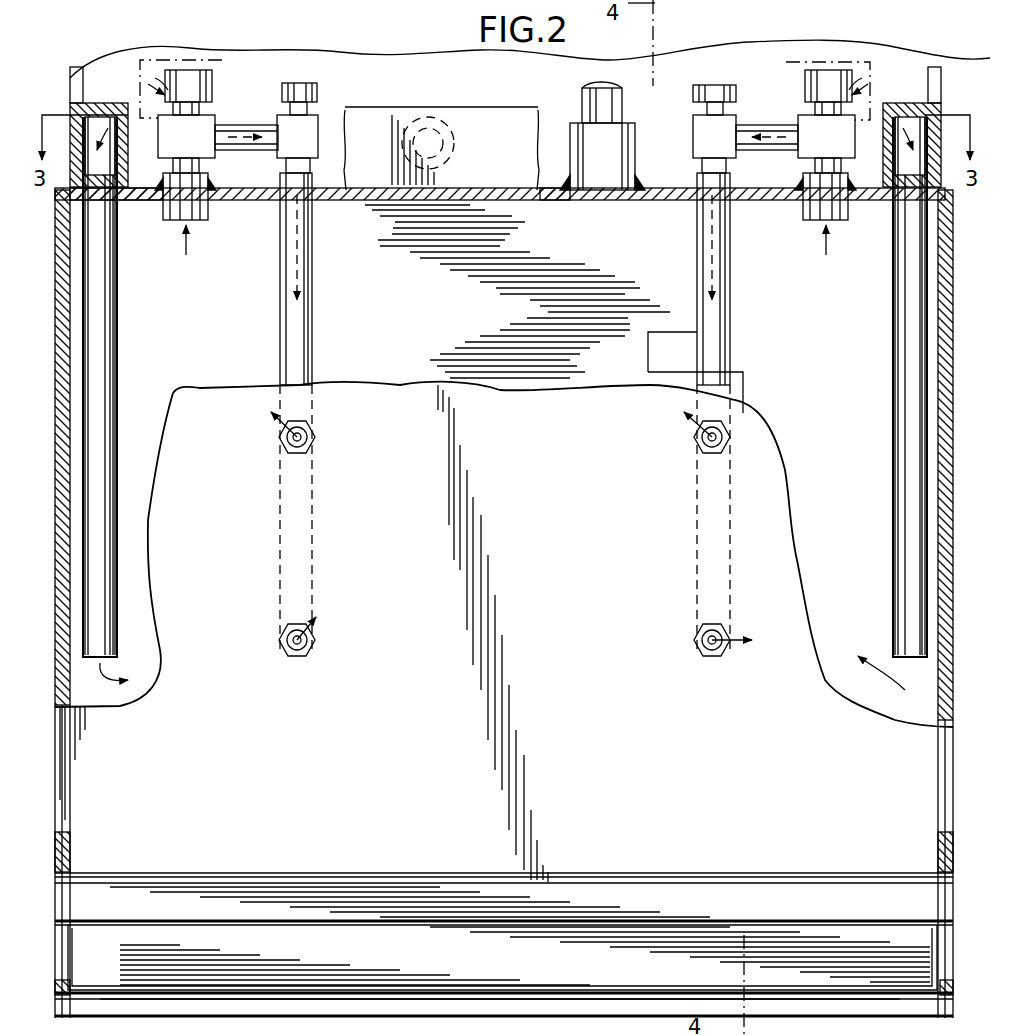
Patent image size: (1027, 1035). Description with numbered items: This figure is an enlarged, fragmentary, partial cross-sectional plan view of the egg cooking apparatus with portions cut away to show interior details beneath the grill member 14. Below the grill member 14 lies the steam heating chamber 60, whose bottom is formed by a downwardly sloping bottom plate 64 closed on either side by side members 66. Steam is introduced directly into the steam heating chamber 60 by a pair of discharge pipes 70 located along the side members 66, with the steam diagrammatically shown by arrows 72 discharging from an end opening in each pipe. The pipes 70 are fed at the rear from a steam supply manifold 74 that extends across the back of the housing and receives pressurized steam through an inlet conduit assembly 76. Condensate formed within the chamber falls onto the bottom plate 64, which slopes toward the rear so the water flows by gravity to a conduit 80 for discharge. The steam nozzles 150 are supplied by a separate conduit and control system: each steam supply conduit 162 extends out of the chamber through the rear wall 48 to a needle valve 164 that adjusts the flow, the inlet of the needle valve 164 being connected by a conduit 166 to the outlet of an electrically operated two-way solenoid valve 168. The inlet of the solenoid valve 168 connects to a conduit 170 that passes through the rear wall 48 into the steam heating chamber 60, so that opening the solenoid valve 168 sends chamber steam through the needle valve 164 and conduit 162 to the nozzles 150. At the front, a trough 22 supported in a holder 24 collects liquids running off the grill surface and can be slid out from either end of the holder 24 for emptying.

The grill member 14 is at (98, 781).
The trough 22 is at (827, 985).
The holder 24 is at (888, 1017).
The rear wall 48 is at (575, 200).
The steam heating chamber 60 is at (228, 328).
The bottom plate 64 is at (567, 380).
The side members 66 is at (70, 385).
The discharge pipes 70 is at (115, 630).
The arrows 72 is at (100, 685).
The steam supply manifold 74 is at (130, 195).
The inlet conduit assembly 76 is at (438, 118).
The conduit 80 is at (636, 135).
The steam nozzles 150 is at (315, 440).
The steam supply conduit 162 is at (315, 340).
The needle valve 164 is at (318, 120).
The conduit 166 is at (240, 125).
The solenoid valve 168 is at (188, 70).
The conduit 170 is at (208, 220).